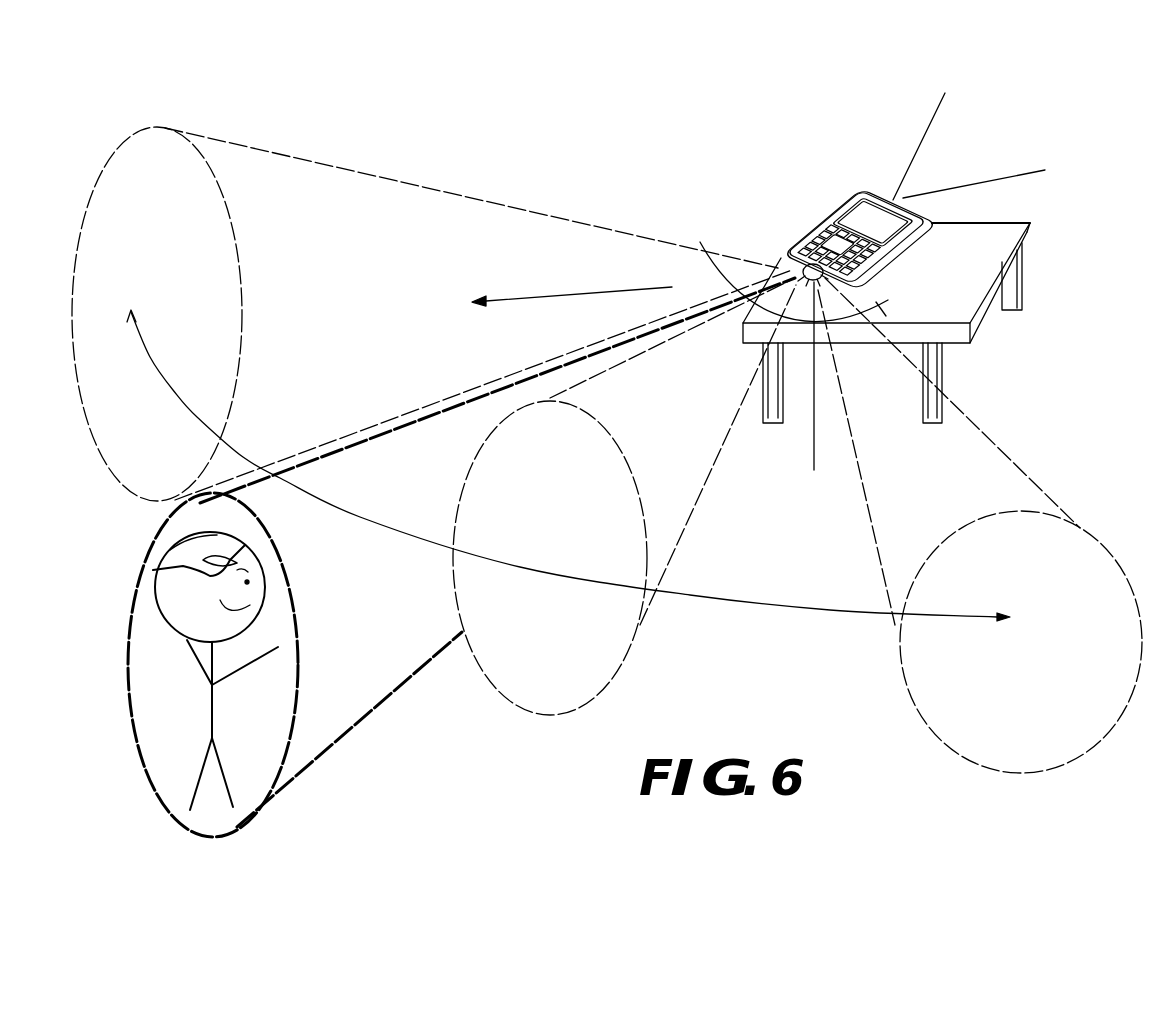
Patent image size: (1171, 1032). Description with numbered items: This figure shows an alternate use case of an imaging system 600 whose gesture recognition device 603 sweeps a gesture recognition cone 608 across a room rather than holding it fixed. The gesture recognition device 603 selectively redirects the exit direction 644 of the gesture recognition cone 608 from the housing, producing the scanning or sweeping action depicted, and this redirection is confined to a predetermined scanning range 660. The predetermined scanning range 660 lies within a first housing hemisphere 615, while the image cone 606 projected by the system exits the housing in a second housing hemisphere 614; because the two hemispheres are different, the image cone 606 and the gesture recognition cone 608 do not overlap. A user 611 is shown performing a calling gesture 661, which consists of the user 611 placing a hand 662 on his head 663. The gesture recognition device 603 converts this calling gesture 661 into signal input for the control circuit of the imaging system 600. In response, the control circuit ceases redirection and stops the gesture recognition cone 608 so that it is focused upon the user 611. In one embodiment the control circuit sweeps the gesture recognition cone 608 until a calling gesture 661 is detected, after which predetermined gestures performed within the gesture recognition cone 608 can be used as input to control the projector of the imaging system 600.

The imaging system 600 is at (811, 200).
The gesture recognition device 603 is at (797, 289).
The image cone 606 is at (953, 187).
The gesture recognition cone 608 is at (500, 205).
The user 611 is at (197, 662).
The second housing hemisphere 614 is at (891, 178).
The first housing hemisphere 615 is at (746, 245).
The exit direction 644 is at (552, 293).
The predetermined scanning range 660 is at (815, 388).
The calling gesture 661 is at (95, 584).
The hand 662 is at (190, 543).
The head 663 is at (257, 593).